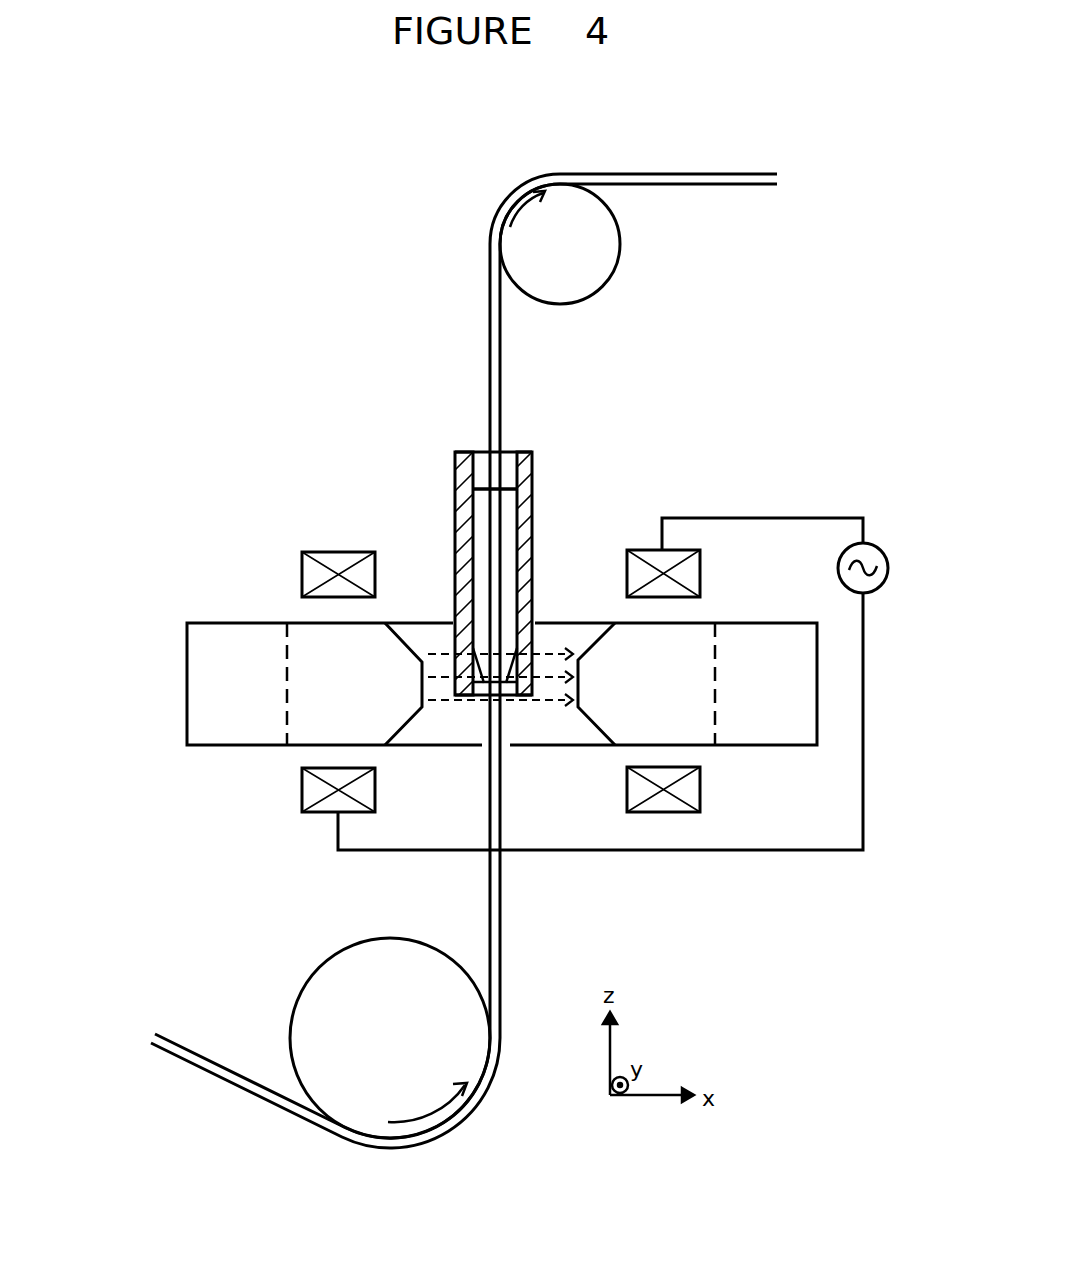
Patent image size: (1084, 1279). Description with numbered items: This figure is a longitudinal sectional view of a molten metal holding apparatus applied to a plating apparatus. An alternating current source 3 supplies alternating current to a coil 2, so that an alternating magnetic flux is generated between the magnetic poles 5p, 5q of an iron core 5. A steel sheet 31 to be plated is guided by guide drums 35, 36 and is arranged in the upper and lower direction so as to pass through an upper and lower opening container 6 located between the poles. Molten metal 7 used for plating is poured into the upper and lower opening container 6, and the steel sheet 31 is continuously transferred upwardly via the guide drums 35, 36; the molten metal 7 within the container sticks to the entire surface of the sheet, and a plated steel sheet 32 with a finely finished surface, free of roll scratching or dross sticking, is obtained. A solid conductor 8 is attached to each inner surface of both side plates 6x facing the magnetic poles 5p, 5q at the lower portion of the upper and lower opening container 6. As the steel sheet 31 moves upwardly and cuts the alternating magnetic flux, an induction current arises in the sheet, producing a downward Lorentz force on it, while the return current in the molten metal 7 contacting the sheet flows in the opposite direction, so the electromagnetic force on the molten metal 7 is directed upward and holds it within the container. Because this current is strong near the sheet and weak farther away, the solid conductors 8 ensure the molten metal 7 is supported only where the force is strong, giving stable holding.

The coil 2 is at (340, 558).
The alternating current source 3 is at (871, 553).
The iron core 5 is at (464, 709).
The magnetic pole 5p is at (354, 684).
The magnetic pole 5q is at (646, 684).
The upper and lower opening container 6 is at (503, 573).
The side plate 6x is at (527, 540).
The molten metal 7 is at (508, 500).
The solid conductor 8 is at (480, 697).
The steel sheet to be plated 31 is at (173, 1048).
The plated steel sheet 32 is at (488, 307).
The guide drum 35 is at (335, 995).
The guide drum 36 is at (585, 255).